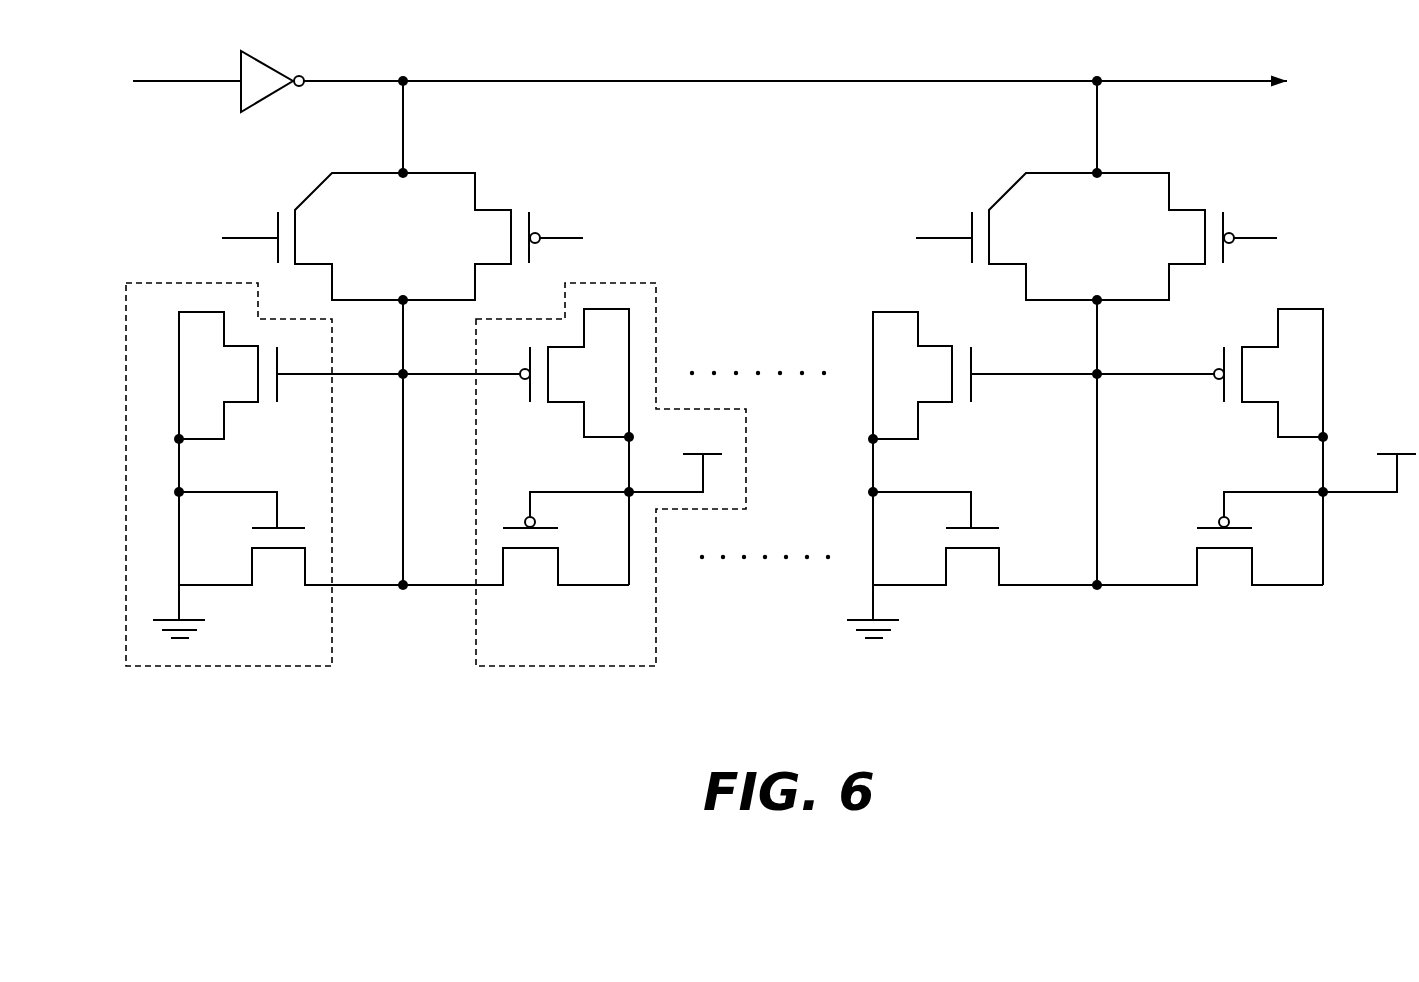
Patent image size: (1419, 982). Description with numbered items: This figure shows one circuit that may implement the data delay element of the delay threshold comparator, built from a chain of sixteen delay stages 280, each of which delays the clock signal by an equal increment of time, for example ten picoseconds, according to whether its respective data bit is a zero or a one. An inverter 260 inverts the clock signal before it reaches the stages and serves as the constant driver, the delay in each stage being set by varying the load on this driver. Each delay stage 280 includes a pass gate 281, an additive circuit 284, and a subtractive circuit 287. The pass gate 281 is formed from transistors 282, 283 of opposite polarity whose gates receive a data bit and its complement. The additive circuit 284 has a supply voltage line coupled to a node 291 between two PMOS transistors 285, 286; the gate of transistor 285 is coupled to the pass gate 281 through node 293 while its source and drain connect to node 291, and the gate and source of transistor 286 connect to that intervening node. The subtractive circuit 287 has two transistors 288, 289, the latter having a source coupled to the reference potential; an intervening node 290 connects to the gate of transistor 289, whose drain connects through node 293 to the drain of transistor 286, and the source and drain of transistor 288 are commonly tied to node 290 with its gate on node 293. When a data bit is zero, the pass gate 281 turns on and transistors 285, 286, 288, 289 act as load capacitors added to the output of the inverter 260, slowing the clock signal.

The inverter 260 is at (270, 67).
The delay stage 280 is at (770, 411).
The pass gate 281 is at (395, 202).
The transistor 282 is at (315, 212).
The transistor 283 is at (492, 212).
The additive circuit 284 is at (574, 474).
The PMOS transistor 285 is at (560, 347).
The PMOS transistor 286 is at (538, 528).
The subtractive circuit 287 is at (264, 454).
The transistor 288 is at (252, 348).
The transistor 289 is at (267, 528).
The intervening node 290 is at (182, 492).
The node 291 is at (627, 488).
The node 293 is at (405, 376).